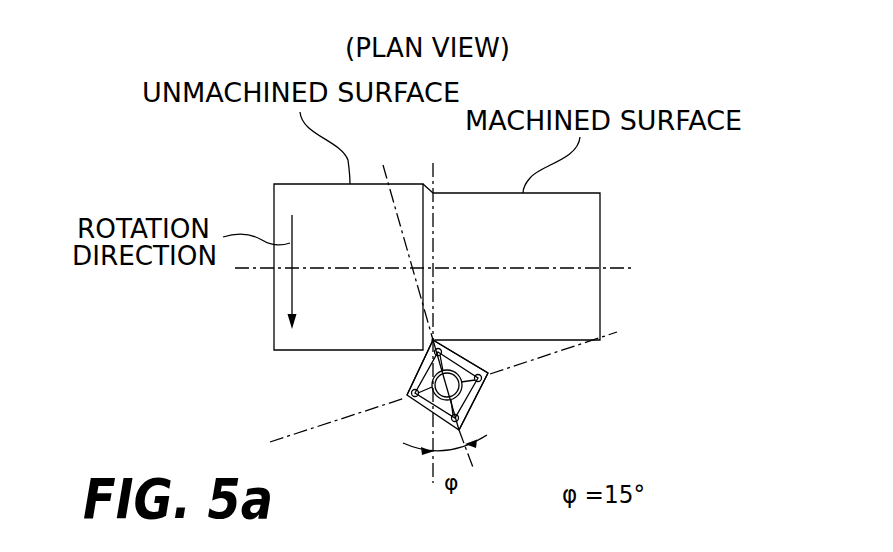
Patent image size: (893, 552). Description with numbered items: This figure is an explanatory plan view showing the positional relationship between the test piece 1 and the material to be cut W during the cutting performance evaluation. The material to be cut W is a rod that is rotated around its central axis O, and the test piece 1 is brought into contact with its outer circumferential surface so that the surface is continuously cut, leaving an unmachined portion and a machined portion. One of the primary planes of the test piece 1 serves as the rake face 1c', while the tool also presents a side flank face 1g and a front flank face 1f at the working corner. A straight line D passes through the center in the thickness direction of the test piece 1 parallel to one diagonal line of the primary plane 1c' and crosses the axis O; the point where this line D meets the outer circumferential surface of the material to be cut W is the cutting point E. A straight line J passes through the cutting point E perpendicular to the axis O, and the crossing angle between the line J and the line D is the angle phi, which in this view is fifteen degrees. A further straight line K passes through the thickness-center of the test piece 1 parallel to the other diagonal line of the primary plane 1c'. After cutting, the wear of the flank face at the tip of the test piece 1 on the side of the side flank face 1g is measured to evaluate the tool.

The test piece 1 is at (454, 383).
The side flank face 1g is at (417, 370).
The front flank face 1f is at (480, 365).
The rake face 1c' is at (521, 407).
The material to be cut W is at (297, 184).
The central axis of material to be cut O is at (450, 267).
The straight line passing E perpendicular to O J is at (438, 172).
The straight line parallel to the other diagonal line of the primary plane K is at (308, 430).
The straight line parallel to one diagonal line of the primary plane D is at (474, 470).
The cutting point E is at (433, 340).